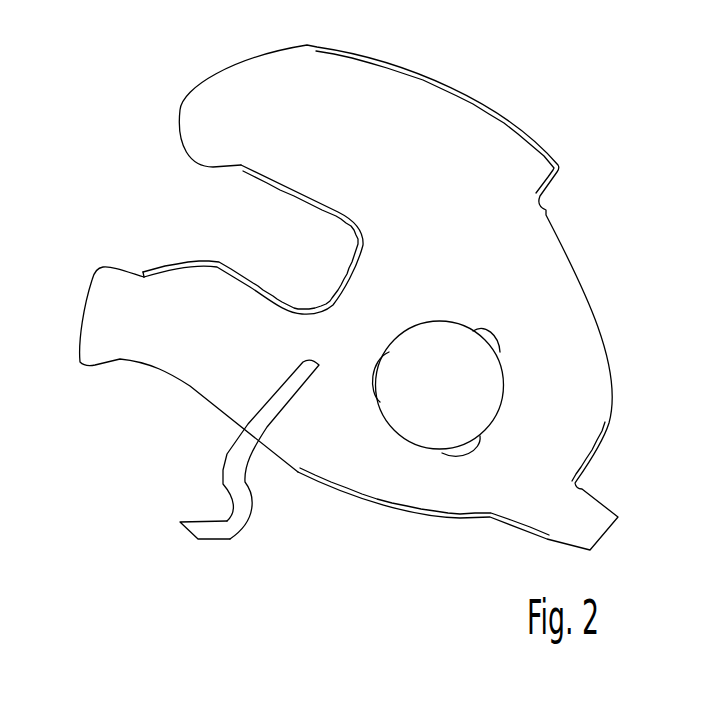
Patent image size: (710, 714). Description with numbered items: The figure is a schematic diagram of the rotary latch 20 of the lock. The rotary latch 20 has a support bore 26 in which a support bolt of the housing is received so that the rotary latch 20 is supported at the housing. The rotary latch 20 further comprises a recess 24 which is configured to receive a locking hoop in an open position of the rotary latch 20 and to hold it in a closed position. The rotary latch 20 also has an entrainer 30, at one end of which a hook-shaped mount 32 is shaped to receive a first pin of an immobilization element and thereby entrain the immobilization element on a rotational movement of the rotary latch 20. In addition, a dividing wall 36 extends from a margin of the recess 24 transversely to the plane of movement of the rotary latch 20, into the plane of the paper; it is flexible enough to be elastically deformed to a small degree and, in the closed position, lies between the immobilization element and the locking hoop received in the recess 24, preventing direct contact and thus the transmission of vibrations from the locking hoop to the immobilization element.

The rotary latch 20 is at (588, 172).
The recess 24 is at (277, 235).
The support bore 26 is at (497, 407).
The entrainer 30 is at (220, 530).
The hook-shaped mount 32 is at (229, 505).
The dividing wall 36 is at (252, 284).